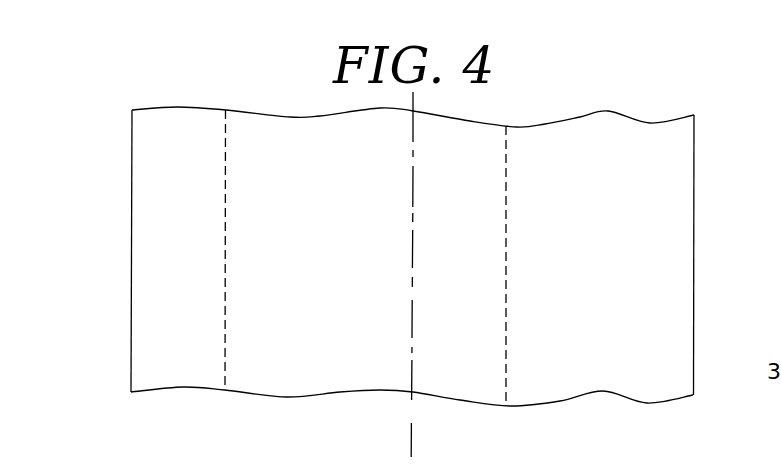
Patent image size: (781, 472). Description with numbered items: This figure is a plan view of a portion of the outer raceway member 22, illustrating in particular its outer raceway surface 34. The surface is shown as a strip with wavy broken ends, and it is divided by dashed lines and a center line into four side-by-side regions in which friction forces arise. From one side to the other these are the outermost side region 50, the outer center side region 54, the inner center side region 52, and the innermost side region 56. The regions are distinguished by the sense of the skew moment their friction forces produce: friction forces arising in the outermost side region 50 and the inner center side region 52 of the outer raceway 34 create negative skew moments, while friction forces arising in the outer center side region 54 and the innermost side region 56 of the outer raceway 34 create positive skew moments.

The outer raceway member 22 is at (695, 293).
The outer raceway surface 34 is at (150, 353).
The outermost side region 50 is at (198, 256).
The inner center side region 52 is at (483, 261).
The outer center side region 54 is at (322, 248).
The innermost side region 56 is at (617, 260).